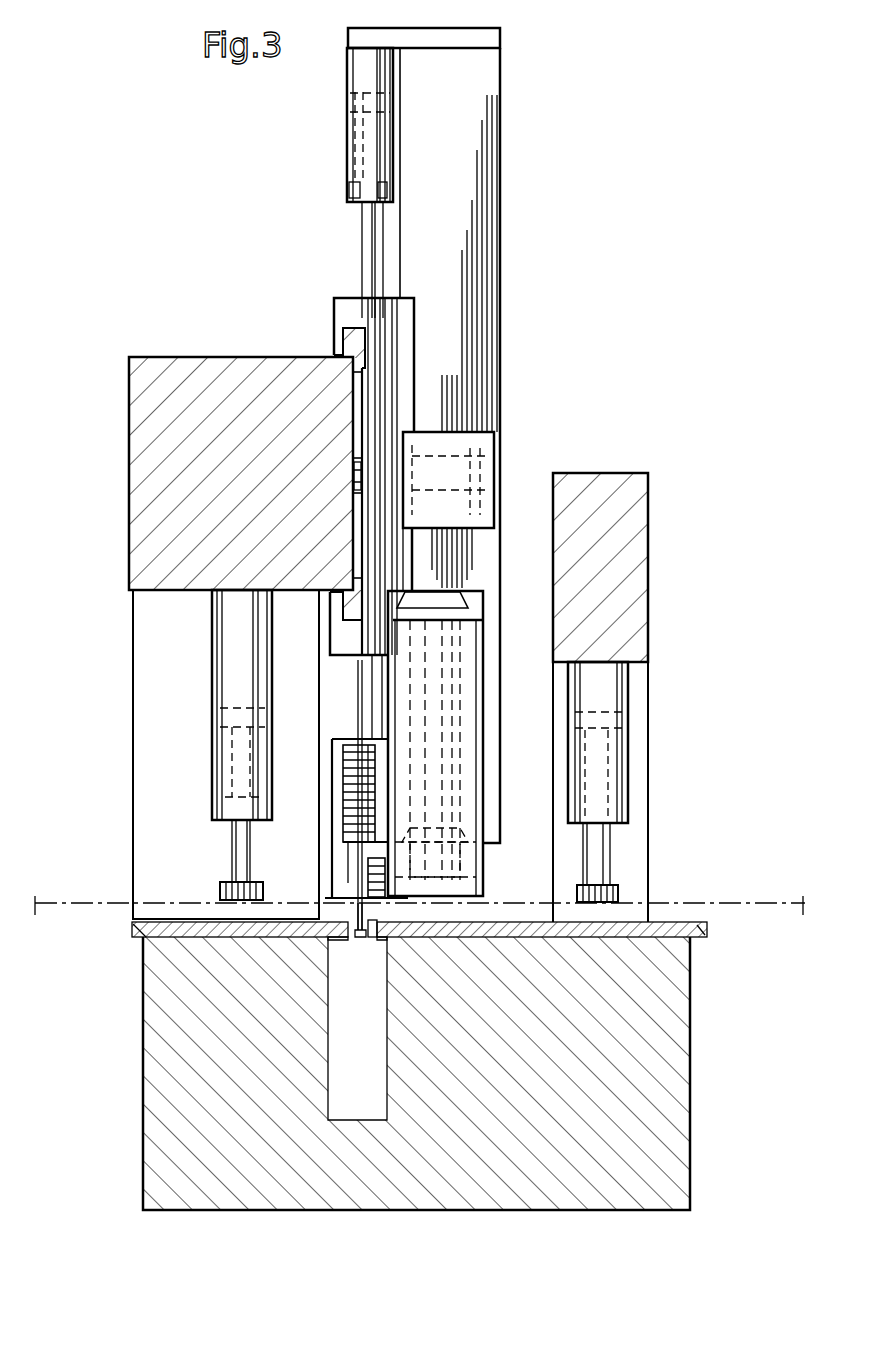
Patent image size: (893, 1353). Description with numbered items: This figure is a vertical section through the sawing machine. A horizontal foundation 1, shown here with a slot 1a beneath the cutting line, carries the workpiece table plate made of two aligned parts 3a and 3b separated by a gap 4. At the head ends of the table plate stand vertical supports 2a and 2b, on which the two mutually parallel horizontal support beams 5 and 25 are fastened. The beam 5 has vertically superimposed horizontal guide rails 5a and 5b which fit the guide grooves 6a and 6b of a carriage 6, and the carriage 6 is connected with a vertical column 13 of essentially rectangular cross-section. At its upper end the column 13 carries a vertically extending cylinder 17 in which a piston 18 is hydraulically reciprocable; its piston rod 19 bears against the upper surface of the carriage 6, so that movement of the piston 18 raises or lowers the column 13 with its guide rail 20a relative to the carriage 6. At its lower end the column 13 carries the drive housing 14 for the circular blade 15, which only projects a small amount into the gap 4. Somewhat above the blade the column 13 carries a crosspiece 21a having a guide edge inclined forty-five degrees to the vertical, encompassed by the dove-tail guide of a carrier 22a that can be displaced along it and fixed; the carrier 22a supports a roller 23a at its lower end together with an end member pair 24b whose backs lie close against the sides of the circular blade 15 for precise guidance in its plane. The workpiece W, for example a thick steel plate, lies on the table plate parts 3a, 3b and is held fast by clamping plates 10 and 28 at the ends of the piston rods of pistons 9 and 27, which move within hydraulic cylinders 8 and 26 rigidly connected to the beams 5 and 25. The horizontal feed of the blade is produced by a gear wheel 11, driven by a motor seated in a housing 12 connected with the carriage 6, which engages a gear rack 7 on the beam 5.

The horizontal foundation 1 is at (160, 1045).
The slot in base 1a is at (330, 1022).
The vertical support 2a is at (133, 866).
The vertical support 2b is at (640, 667).
The table plate part 3a is at (140, 937).
The table plate part 3b is at (697, 942).
The gap 4 is at (358, 940).
The horizontal support beam 5 is at (150, 388).
The horizontal guide rail 5a is at (360, 348).
The horizontal guide rail 5b is at (348, 628).
The carriage 6 is at (372, 310).
The guide groove 6a is at (338, 347).
The guide groove 6b is at (334, 605).
The gear rack 7 is at (360, 470).
The hydraulic cylinder 8 is at (235, 666).
The piston 9 is at (240, 718).
The clamping plate 10 is at (240, 846).
The gear wheel 11 is at (472, 456).
The housing 12 is at (428, 440).
The vertical column 13 is at (482, 133).
The drive housing 14 is at (397, 756).
The circular blade 15 is at (356, 706).
The cylinder 17 is at (365, 71).
The piston 18 is at (370, 101).
The piston rod 19 is at (370, 232).
The guide rail 20a is at (390, 264).
The crosspiece 21a is at (438, 596).
The carrier 22a is at (470, 874).
The roller 23a is at (372, 940).
The end member pair 24b is at (350, 886).
The horizontal support beam 25 is at (635, 570).
The hydraulic cylinder 26 is at (605, 700).
The piston 27 is at (612, 730).
The clamping plate 28 is at (617, 886).
The workpiece W is at (733, 910).